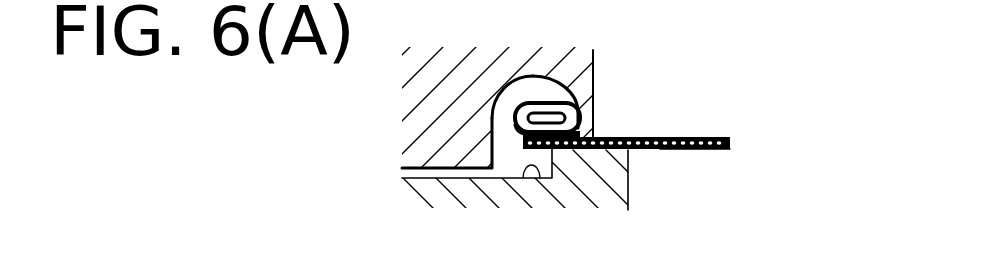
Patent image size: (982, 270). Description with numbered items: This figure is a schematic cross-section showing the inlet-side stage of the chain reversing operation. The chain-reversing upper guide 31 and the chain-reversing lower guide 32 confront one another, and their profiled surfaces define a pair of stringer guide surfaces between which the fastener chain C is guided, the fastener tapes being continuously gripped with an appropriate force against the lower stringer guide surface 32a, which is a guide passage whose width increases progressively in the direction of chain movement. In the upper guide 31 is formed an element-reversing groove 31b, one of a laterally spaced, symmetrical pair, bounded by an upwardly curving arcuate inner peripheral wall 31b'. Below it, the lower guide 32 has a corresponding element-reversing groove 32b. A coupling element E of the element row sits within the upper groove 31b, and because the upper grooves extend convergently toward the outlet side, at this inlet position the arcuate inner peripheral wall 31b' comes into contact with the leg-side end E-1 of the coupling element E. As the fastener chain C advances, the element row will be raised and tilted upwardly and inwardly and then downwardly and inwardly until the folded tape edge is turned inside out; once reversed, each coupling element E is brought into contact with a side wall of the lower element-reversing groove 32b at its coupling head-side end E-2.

The chain-reversing upper guide 31 is at (606, 51).
The element-reversing groove 31b is at (615, 80).
The arcuate inner peripheral wall 31b' is at (469, 59).
The coupling element E is at (548, 110).
The leg-side end E-1 is at (600, 116).
The coupling head-side end E-2 is at (509, 142).
The chain-reversing lower guide 32 is at (639, 193).
The lower stringer guide surface 32a is at (610, 137).
The element-reversing groove 32b is at (538, 178).
The fastener chain C is at (700, 160).